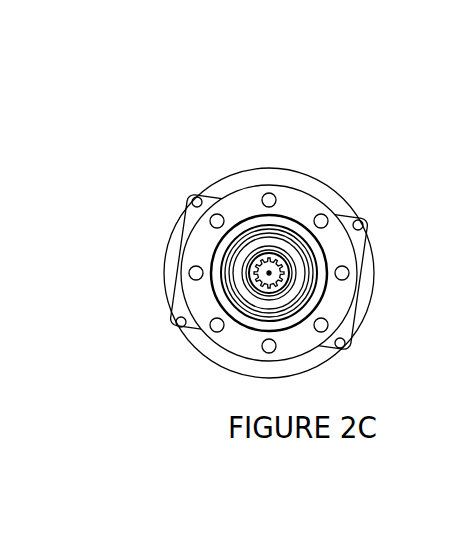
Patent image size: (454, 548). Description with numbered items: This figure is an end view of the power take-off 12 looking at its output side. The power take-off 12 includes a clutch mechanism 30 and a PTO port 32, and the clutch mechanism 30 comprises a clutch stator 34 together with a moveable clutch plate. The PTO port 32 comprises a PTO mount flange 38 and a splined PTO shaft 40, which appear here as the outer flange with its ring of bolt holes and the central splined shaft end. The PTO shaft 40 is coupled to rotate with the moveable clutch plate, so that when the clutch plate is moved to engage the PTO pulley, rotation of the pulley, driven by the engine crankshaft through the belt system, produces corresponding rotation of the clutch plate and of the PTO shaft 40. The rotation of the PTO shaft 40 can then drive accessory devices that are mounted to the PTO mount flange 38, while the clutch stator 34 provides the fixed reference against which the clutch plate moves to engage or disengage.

The power take-off 12 is at (253, 215).
The clutch mechanism 30 is at (309, 226).
The clutch stator 34 is at (358, 222).
The PTO port 32 is at (283, 207).
The PTO mount flange 38 is at (293, 208).
The splined PTO shaft 40 is at (270, 274).